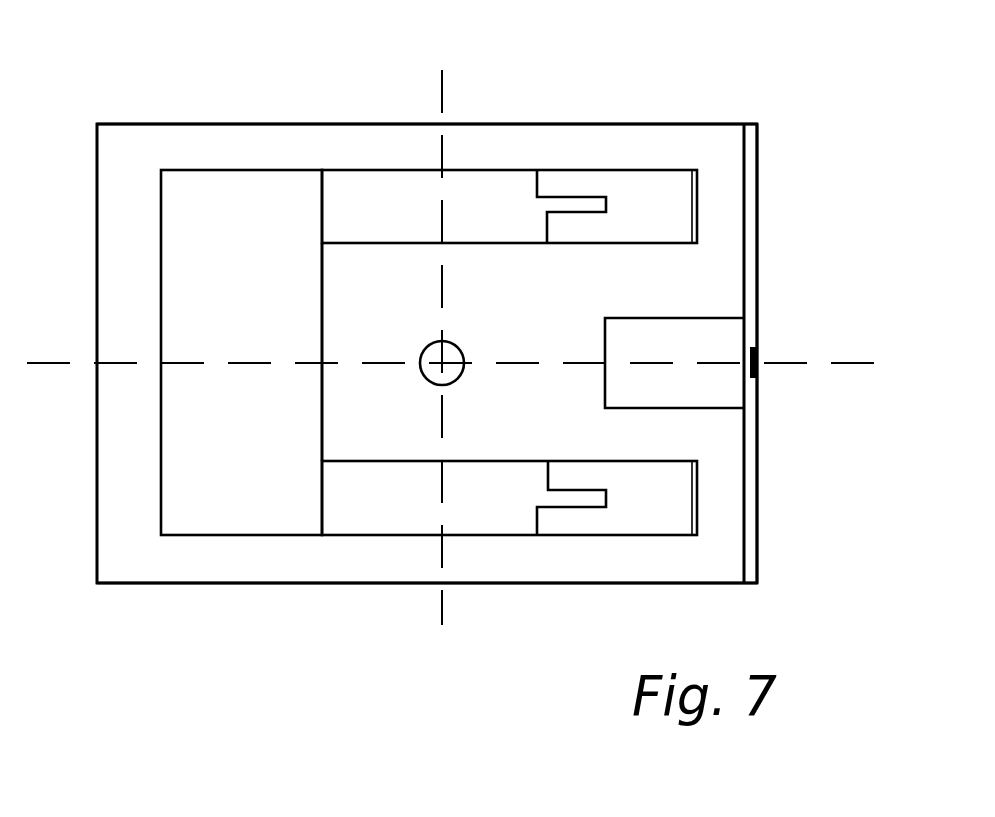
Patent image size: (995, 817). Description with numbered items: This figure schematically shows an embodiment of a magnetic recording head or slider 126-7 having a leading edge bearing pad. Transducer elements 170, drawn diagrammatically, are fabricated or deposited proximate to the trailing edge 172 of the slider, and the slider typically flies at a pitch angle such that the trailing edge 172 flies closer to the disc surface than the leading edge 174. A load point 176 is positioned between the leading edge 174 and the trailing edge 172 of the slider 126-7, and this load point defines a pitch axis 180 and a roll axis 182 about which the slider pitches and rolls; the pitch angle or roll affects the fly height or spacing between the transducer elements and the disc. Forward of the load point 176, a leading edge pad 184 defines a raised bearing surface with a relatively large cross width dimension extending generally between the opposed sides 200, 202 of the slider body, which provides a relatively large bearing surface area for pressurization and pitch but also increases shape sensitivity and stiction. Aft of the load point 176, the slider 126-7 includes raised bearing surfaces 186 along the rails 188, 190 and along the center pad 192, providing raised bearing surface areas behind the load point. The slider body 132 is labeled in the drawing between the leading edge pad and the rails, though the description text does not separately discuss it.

The slider 126-7 is at (760, 124).
The body 132 is at (353, 352).
The transducer elements 170 is at (757, 343).
The trailing edge 172 is at (748, 222).
The leading edge 174 is at (97, 267).
The load point 176 is at (458, 348).
The pitch axis 180 is at (444, 78).
The roll axis 182 is at (795, 363).
The leading edge pad 184 is at (160, 196).
The raised bearing surfaces 186 is at (571, 168).
The rail 188 is at (457, 170).
The rail 190 is at (486, 461).
The center pad 192 is at (625, 340).
The side 200 is at (288, 124).
The side 202 is at (252, 585).